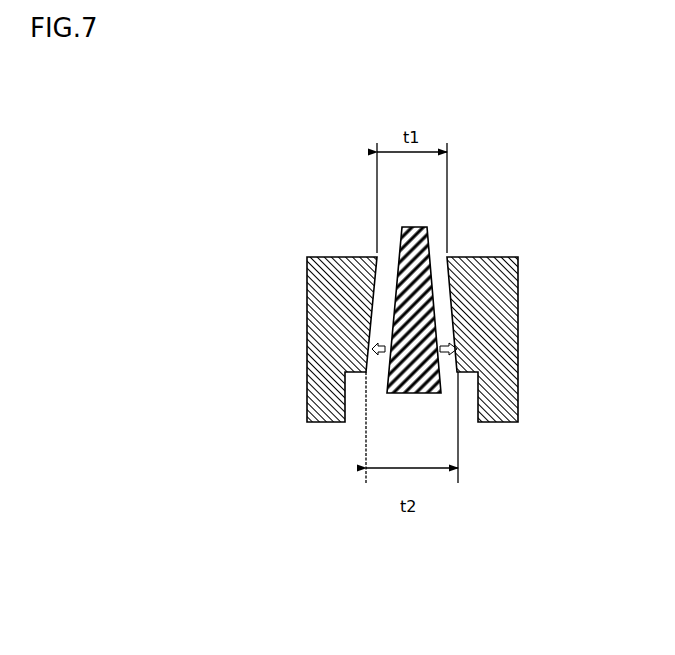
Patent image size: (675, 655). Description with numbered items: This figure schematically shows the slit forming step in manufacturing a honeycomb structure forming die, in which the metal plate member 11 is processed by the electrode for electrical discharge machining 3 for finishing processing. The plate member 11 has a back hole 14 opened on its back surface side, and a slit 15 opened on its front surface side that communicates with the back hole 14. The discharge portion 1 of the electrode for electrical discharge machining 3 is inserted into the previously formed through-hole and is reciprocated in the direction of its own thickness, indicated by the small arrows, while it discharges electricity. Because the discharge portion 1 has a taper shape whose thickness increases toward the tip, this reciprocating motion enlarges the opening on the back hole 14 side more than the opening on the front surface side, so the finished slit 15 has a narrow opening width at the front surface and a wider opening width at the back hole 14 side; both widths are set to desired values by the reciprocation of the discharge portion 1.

The discharge portion 1 is at (423, 395).
The electrode for electrical discharge machining for finishing processing 3 is at (412, 225).
The plate member 11 is at (316, 251).
The slit 15 is at (440, 292).
The back hole 14 is at (472, 408).